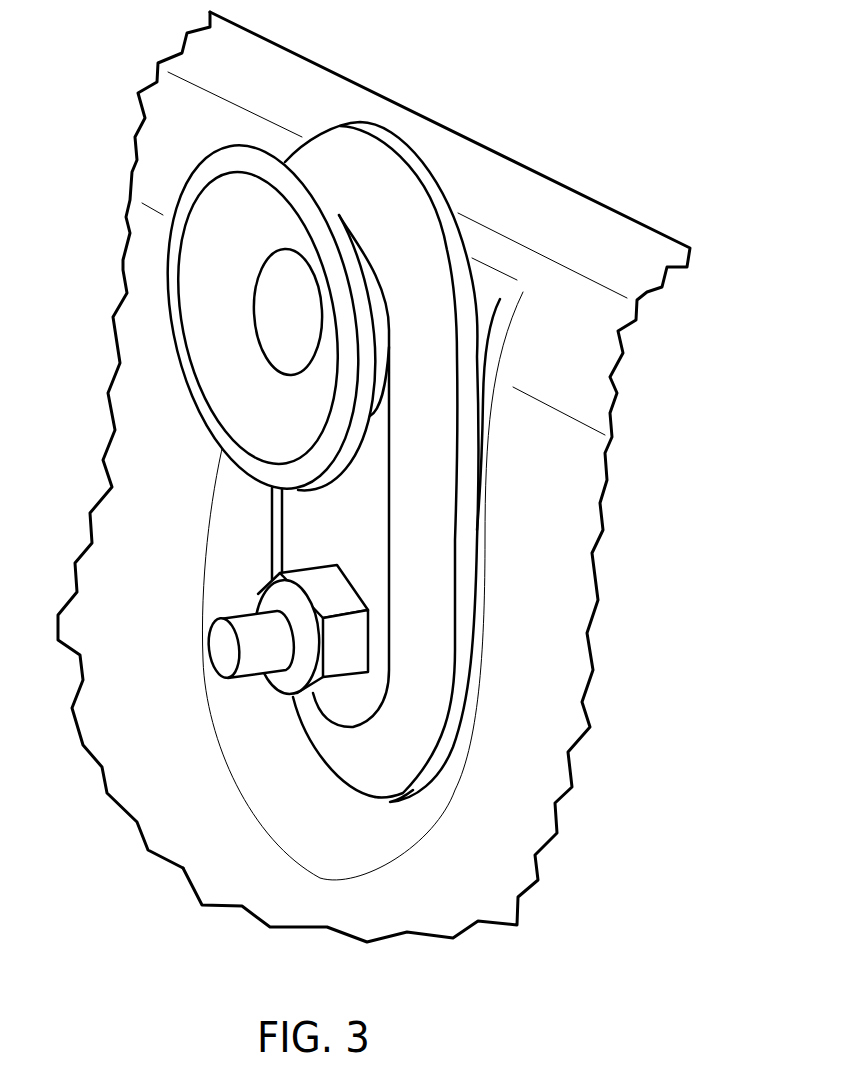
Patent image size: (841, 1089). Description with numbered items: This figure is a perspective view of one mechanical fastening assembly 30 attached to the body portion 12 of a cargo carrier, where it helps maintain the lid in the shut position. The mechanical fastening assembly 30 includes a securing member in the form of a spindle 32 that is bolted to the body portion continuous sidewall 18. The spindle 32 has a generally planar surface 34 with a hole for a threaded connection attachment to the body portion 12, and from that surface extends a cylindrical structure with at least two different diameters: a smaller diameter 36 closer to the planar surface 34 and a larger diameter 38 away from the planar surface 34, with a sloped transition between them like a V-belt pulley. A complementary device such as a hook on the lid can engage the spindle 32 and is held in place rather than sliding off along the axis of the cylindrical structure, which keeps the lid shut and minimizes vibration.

The body portion 12 is at (619, 186).
The body portion continuous sidewall 18 is at (137, 752).
The mechanical fastening assembly 30 is at (456, 99).
The spindle 32 is at (327, 150).
The planar surface 34 is at (298, 537).
The smaller diameter 36 is at (378, 312).
The larger diameter 38 is at (272, 146).